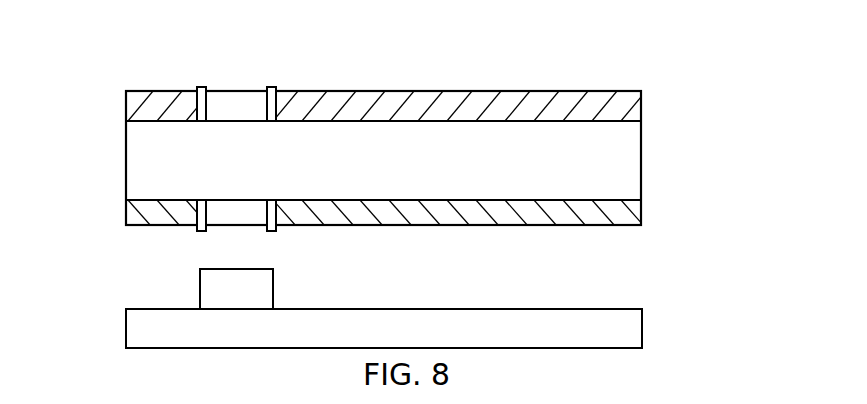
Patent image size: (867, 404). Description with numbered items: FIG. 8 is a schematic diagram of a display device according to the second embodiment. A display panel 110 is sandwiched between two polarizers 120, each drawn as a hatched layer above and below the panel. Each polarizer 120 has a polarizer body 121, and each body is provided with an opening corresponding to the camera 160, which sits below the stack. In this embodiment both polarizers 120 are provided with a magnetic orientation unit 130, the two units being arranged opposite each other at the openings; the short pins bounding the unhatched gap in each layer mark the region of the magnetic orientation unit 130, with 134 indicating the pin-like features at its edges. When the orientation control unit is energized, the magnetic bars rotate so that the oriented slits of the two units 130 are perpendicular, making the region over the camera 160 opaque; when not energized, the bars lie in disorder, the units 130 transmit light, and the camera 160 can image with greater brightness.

The display panel 110 is at (632, 155).
The polarizer 120 is at (627, 107).
The polarizer body 121 is at (449, 134).
The magnetic orientation unit 130 is at (238, 97).
The conductive pillar 134 is at (275, 95).
The camera 160 is at (257, 287).